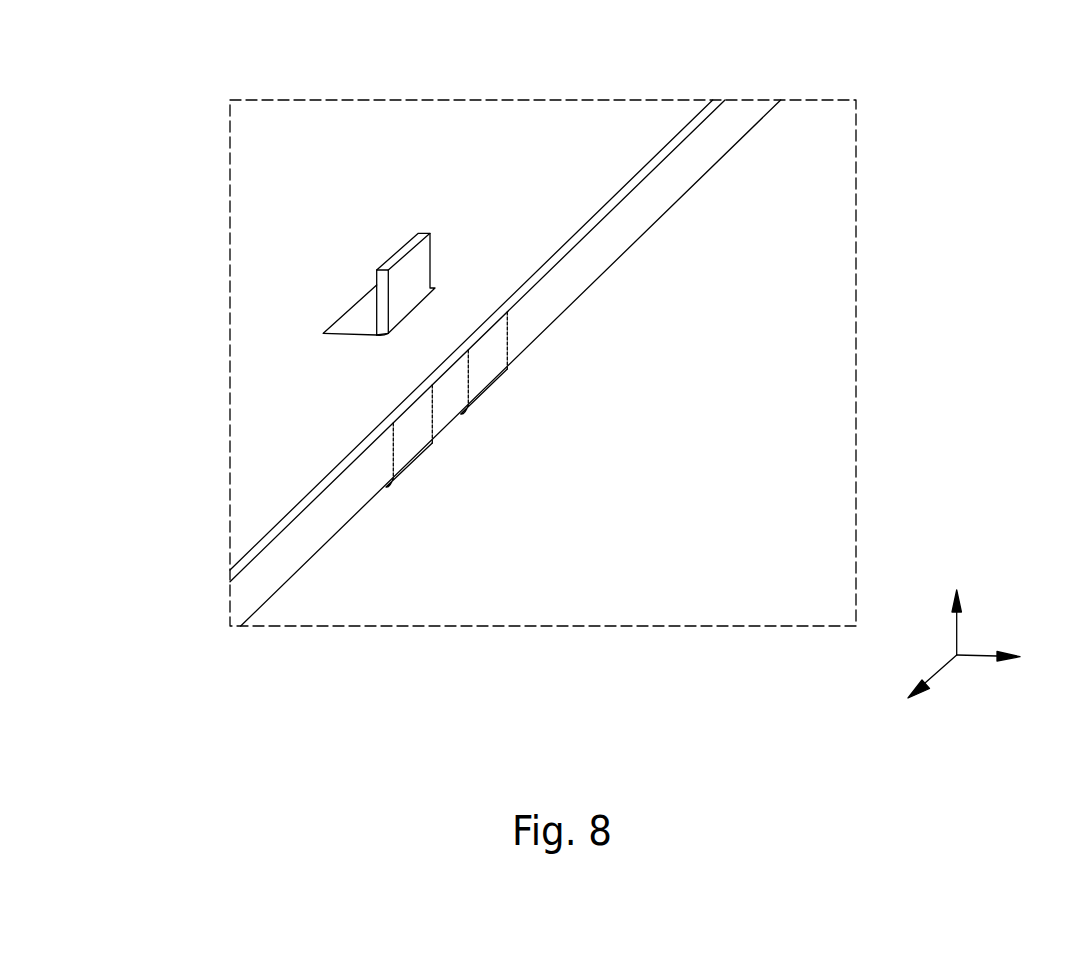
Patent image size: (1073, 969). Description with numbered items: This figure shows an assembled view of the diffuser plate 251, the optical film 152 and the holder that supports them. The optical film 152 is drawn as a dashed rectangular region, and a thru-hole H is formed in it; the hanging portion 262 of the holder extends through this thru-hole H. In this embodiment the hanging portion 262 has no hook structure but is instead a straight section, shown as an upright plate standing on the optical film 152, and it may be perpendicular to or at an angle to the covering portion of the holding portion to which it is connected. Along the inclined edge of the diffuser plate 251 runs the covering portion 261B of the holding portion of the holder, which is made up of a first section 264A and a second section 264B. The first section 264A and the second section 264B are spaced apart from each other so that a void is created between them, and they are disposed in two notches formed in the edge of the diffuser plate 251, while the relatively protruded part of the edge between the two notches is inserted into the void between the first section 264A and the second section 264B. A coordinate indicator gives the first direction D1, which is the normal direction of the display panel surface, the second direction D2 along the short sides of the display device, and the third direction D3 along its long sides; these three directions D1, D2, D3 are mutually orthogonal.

The optical film 152 is at (573, 125).
The diffuser plate 251 is at (738, 125).
The covering portion 261B is at (553, 401).
The first section 264A is at (408, 433).
The second section 264B is at (545, 363).
The hanging portion 262 is at (418, 240).
The thru-hole H is at (357, 322).
The first direction D1 is at (956, 605).
The second direction D2 is at (1010, 656).
The third direction D3 is at (912, 693).